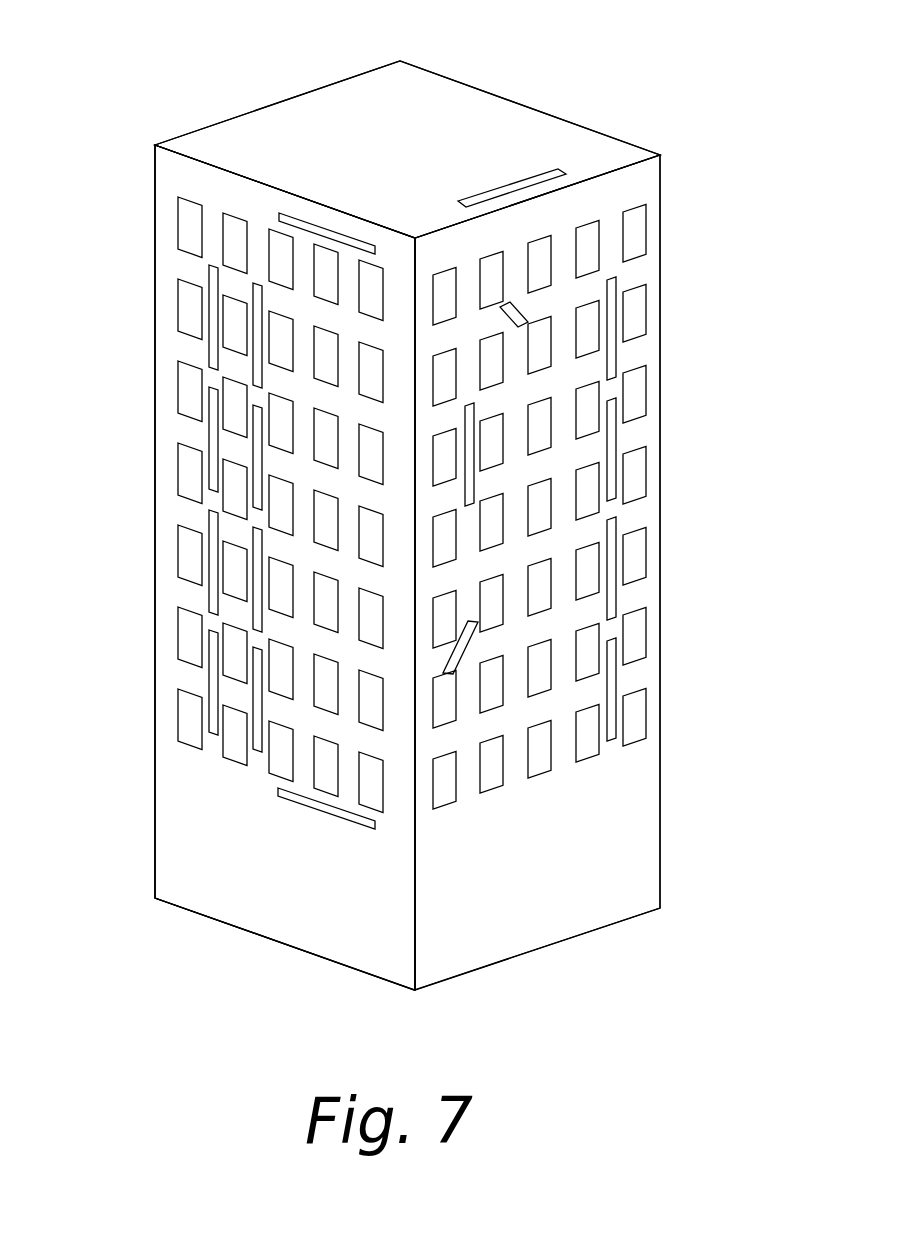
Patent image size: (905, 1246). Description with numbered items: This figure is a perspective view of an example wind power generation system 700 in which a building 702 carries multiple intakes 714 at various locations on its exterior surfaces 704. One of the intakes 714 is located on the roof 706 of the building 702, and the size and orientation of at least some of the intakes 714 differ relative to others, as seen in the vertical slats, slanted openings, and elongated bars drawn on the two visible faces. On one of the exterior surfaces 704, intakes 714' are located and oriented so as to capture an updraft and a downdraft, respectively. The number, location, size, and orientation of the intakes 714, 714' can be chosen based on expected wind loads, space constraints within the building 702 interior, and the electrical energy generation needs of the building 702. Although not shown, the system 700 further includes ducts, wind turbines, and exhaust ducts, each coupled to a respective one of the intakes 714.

The power generation system 700 is at (723, 53).
The building 702 is at (153, 145).
The exterior surfaces 704 is at (167, 847).
The roof 706 is at (440, 83).
The intakes 714 is at (409, 573).
The intakes 714' is at (220, 521).